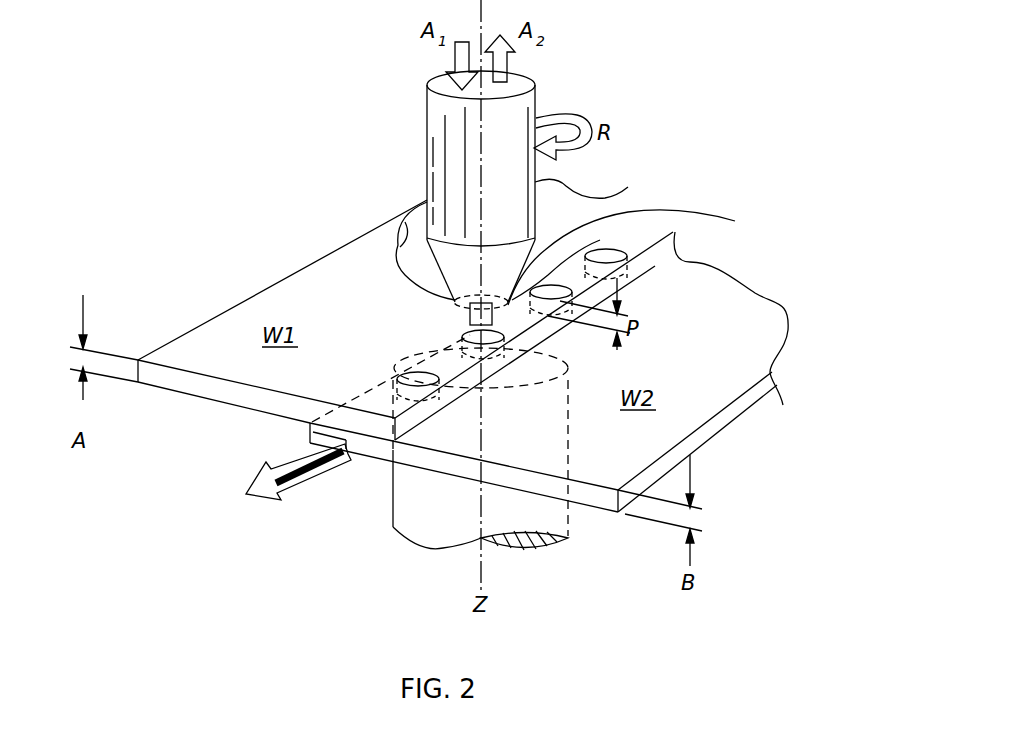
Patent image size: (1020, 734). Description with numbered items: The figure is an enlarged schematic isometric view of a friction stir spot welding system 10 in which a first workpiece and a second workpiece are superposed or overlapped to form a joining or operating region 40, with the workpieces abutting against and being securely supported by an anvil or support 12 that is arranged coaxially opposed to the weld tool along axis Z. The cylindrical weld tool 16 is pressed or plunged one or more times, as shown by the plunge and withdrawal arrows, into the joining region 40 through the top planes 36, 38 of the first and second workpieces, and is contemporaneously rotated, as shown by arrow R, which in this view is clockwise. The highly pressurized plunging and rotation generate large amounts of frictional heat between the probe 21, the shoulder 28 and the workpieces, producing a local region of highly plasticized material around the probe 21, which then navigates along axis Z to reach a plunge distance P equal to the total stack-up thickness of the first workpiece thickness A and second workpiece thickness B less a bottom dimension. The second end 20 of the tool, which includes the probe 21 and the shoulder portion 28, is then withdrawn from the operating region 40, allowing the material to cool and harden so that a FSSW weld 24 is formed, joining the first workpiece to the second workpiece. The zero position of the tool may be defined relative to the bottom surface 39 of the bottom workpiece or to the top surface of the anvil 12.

The FSSW system 10 is at (238, 70).
The anvil 12 is at (392, 483).
The weld tool 16 is at (405, 222).
The second end 20 is at (445, 316).
The probe 21 is at (408, 262).
The FSSW weld 24 is at (475, 346).
The shoulder 28 is at (563, 222).
The top plane of workpiece W1 36 is at (228, 350).
The top plane of workpiece W2 38 is at (690, 385).
The bottom surface of the bottom workpiece 39 is at (608, 449).
The joining region 40 is at (515, 320).